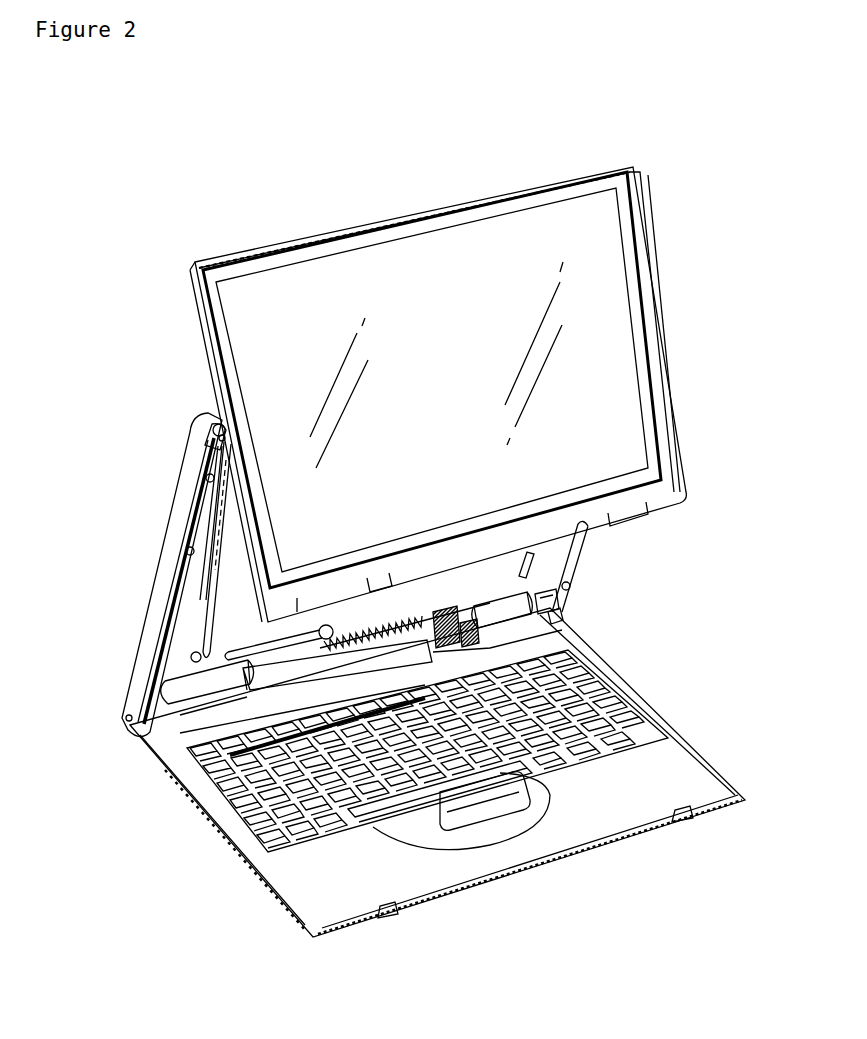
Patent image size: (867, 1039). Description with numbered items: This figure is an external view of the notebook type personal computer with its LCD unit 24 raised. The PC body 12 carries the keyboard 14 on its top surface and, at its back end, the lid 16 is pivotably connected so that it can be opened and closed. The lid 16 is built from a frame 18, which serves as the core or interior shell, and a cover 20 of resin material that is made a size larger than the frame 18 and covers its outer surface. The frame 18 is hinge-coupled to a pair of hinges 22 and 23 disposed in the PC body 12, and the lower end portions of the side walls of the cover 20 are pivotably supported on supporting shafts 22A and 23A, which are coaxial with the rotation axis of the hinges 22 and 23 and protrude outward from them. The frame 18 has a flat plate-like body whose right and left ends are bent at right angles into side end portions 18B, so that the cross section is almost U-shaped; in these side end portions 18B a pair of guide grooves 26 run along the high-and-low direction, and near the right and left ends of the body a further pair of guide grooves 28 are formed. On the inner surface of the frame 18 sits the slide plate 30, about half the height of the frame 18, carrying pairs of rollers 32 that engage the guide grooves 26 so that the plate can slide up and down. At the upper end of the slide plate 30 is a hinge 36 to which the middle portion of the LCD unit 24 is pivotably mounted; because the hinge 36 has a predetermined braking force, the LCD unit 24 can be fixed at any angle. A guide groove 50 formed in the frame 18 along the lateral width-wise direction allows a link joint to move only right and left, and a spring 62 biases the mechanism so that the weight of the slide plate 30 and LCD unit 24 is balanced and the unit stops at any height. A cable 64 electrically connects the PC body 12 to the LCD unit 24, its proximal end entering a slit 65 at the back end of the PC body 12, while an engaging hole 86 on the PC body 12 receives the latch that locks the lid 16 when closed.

The PC body 12 is at (290, 915).
The keyboard 14 is at (627, 697).
The lid 16 is at (175, 430).
The frame 18 is at (175, 601).
The side end portion 18B is at (212, 462).
The cover 20 is at (152, 637).
The hinge 22 is at (162, 754).
The supporting shaft 22A is at (130, 724).
The hinge 23 is at (545, 628).
The supporting shaft 23A is at (560, 617).
The liquid crystal display unit 24 is at (620, 245).
The guide groove 26 is at (204, 512).
The guide groove 28 is at (190, 656).
The slide plate 30 is at (185, 572).
The roller 32 is at (206, 478).
The hinge 36 is at (215, 428).
The guide groove 50 is at (172, 668).
The spring 62 is at (170, 776).
The cable 64 is at (570, 642).
The slit 65 is at (440, 645).
The engaging hole 86 is at (387, 922).